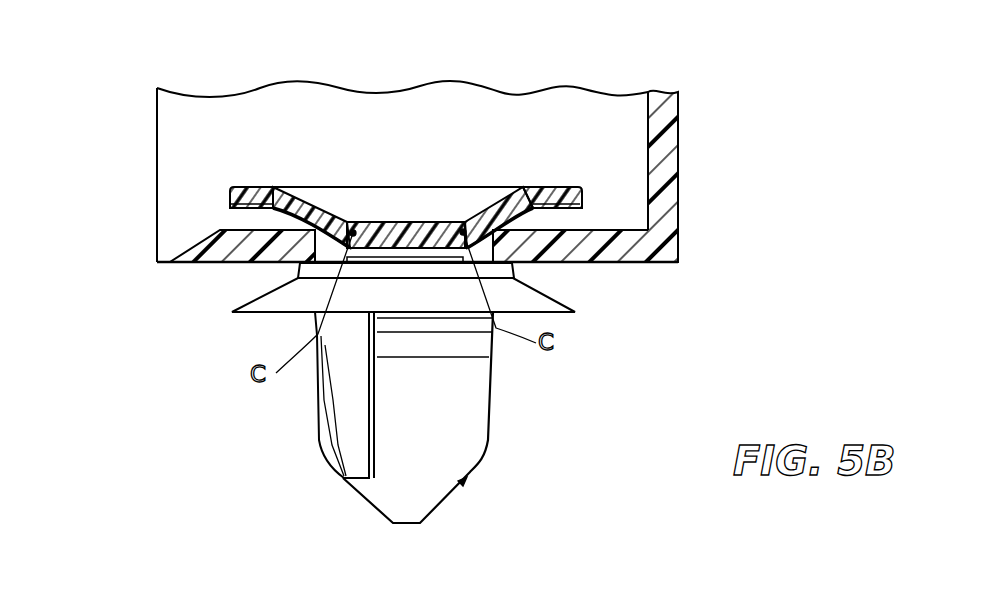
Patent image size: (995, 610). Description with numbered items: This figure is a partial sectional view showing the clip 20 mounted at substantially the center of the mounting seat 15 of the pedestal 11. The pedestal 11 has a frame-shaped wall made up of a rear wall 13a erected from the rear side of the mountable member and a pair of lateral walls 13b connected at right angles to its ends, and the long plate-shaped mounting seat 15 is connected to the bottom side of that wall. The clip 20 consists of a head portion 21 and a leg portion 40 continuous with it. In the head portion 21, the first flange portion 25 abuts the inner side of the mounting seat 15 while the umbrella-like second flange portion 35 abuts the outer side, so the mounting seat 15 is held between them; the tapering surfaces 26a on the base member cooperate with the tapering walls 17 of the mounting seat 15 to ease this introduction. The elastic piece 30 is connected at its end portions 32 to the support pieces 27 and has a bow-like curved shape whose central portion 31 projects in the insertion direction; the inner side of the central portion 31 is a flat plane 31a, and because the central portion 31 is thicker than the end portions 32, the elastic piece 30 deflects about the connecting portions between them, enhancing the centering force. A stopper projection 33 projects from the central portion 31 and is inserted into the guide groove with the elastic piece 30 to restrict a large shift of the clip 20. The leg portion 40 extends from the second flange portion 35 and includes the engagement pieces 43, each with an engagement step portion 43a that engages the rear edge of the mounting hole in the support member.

The pedestal 11 is at (420, 179).
The rear wall 13a is at (673, 195).
The lateral wall 13b is at (608, 104).
The mounting seat 15 is at (657, 252).
The tapering wall 17 is at (183, 251).
The clip 20 is at (314, 461).
The head portion 21 is at (212, 190).
The first flange portion 25 is at (586, 195).
The tapering surface 26a is at (233, 224).
The support piece 27 is at (556, 201).
The elastic piece 30 is at (333, 171).
The central portion 31 is at (410, 238).
The flat plane 31a is at (386, 216).
The end portion 32 is at (322, 216).
The stopper projection 33 is at (410, 250).
The second flange portion 35 is at (284, 313).
The leg portion 40 is at (391, 386).
The engagement piece 43 is at (470, 437).
The engagement step portion 43a is at (495, 330).